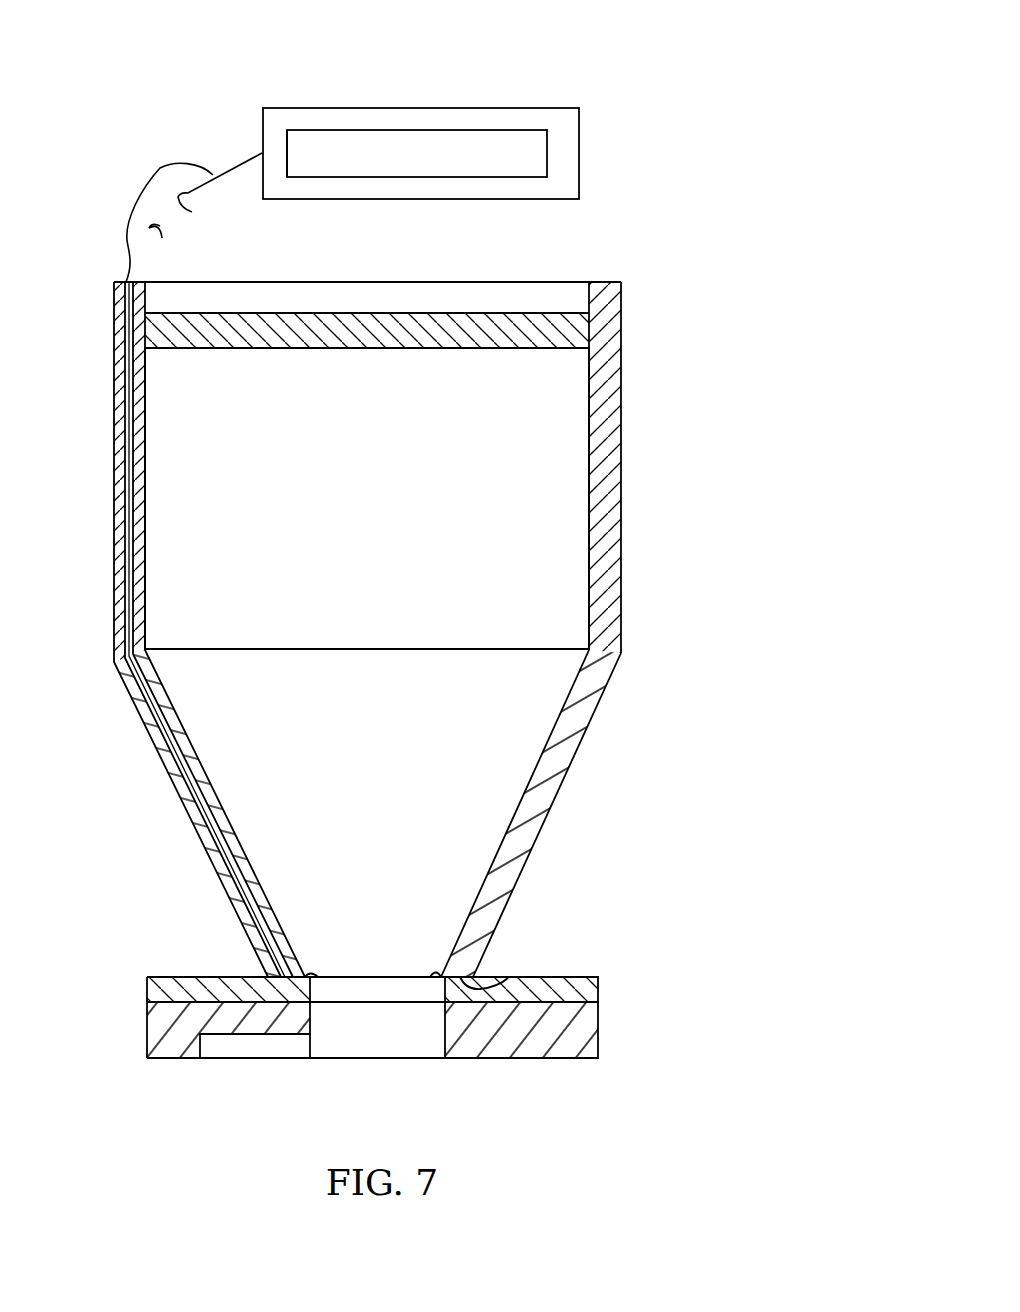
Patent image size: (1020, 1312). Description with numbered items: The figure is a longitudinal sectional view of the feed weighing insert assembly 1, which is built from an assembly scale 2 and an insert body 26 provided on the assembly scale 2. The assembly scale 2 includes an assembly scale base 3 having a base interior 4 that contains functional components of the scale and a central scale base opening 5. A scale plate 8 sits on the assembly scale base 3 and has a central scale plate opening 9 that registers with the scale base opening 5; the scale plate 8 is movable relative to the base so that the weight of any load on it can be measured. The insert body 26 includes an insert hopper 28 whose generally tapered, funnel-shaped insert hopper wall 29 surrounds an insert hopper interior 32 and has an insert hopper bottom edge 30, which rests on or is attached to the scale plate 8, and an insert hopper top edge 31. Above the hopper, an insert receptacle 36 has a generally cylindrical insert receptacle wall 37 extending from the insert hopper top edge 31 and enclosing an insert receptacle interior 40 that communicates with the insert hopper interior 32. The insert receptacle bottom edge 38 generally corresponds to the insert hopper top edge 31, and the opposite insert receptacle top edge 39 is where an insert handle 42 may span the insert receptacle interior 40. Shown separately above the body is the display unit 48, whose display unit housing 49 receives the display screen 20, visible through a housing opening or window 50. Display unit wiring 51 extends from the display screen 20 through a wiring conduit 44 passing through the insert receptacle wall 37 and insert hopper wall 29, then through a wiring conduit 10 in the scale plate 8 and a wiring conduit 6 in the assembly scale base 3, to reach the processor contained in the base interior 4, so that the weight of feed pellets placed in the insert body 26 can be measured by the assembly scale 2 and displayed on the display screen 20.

The feed weighing insert assembly 1 is at (664, 223).
The assembly scale 2 is at (402, 1018).
The assembly scale base 3 is at (165, 1045).
The base interior 4 is at (240, 1036).
The scale base opening 5 is at (446, 1040).
The wiring conduit 6 is at (280, 1040).
The scale plate 8 is at (152, 978).
The scale plate opening 9 is at (432, 991).
The wiring conduit 10 is at (302, 1000).
The display screen 20 is at (467, 153).
The insert body 26 is at (686, 344).
The insert hopper 28 is at (580, 766).
The insert hopper wall 29 is at (525, 816).
The insert hopper bottom edge 30 is at (506, 982).
The insert hopper top edge 31 is at (353, 649).
The insert hopper interior 32 is at (560, 813).
The insert receptacle 36 is at (637, 467).
The insert receptacle wall 37 is at (611, 510).
The insert receptacle bottom edge 38 is at (440, 650).
The insert receptacle top edge 39 is at (620, 284).
The insert receptacle interior 40 is at (534, 588).
The insert handle 42 is at (452, 325).
The wiring conduit 44 is at (135, 470).
The display unit 48 is at (337, 152).
The display unit housing 49 is at (268, 127).
The housing opening or window 50 is at (290, 157).
The display unit wiring 51 is at (162, 167).